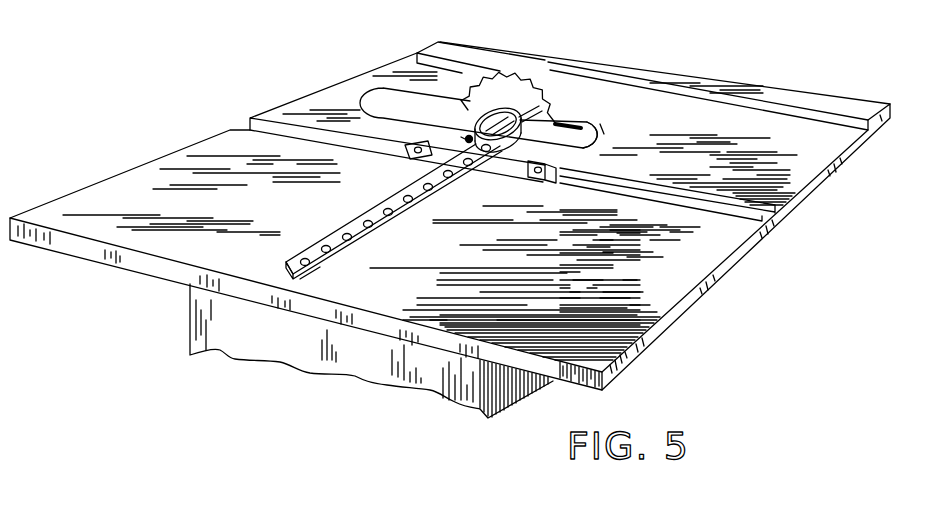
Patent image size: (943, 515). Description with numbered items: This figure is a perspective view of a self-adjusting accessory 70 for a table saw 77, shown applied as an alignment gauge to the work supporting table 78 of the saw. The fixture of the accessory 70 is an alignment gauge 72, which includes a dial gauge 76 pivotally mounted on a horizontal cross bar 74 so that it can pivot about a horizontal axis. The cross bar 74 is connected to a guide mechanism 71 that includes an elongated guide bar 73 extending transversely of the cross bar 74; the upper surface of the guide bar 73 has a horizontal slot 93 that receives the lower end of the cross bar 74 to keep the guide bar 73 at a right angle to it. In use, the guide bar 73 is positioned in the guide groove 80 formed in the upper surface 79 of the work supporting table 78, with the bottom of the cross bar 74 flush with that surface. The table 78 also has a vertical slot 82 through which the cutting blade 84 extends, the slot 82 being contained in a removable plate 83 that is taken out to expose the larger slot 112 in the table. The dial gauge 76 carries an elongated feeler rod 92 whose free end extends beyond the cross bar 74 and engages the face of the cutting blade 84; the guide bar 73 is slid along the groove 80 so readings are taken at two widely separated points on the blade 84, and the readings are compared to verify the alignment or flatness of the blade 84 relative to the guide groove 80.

The self-adjusting accessory 70 is at (283, 255).
The guide mechanism 71 is at (395, 134).
The alignment gauge 72 is at (325, 284).
The guide bar 73 is at (432, 152).
The cross bar 74 is at (353, 227).
The dial gauge 76 is at (486, 113).
The table saw 77 is at (667, 349).
The work supporting table 78 is at (678, 310).
The upper surface 79 is at (814, 137).
The guide groove 80 is at (848, 118).
The vertical slot 82 is at (575, 118).
The plate 83 is at (606, 120).
The cutting blade 84 is at (503, 87).
The feeler rod 92 is at (540, 103).
The horizontal slot 93 is at (487, 155).
The larger slot 112 is at (595, 130).